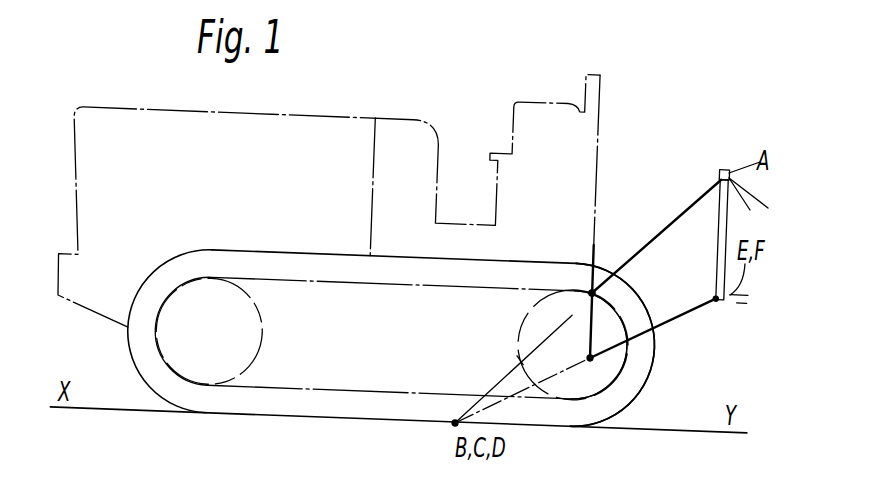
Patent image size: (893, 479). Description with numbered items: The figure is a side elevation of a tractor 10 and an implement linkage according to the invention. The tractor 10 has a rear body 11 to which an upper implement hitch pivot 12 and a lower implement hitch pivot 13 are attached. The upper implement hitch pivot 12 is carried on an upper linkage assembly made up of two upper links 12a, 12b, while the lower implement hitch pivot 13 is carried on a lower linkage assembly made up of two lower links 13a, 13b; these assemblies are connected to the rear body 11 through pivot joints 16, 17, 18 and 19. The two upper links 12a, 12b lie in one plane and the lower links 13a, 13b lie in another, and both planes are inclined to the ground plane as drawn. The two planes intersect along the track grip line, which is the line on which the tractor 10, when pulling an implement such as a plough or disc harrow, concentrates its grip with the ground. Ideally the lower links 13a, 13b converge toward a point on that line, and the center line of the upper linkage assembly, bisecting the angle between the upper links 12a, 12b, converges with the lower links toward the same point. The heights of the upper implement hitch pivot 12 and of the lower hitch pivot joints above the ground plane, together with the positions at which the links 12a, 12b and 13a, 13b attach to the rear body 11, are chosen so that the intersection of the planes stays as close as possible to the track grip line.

The tractor 10 is at (413, 108).
The rear body 11 is at (596, 252).
The upper implement hitch pivot 12 is at (727, 170).
The upper link 12a is at (656, 223).
The upper link 12b is at (668, 220).
The lower implement hitch pivot 13 is at (712, 296).
The lower link 13a is at (663, 338).
The lower link 13b is at (672, 318).
The pivot joint 16 is at (640, 346).
The pivot joint 17 is at (630, 383).
The pivot joint 18 is at (645, 283).
The pivot joint 19 is at (597, 291).